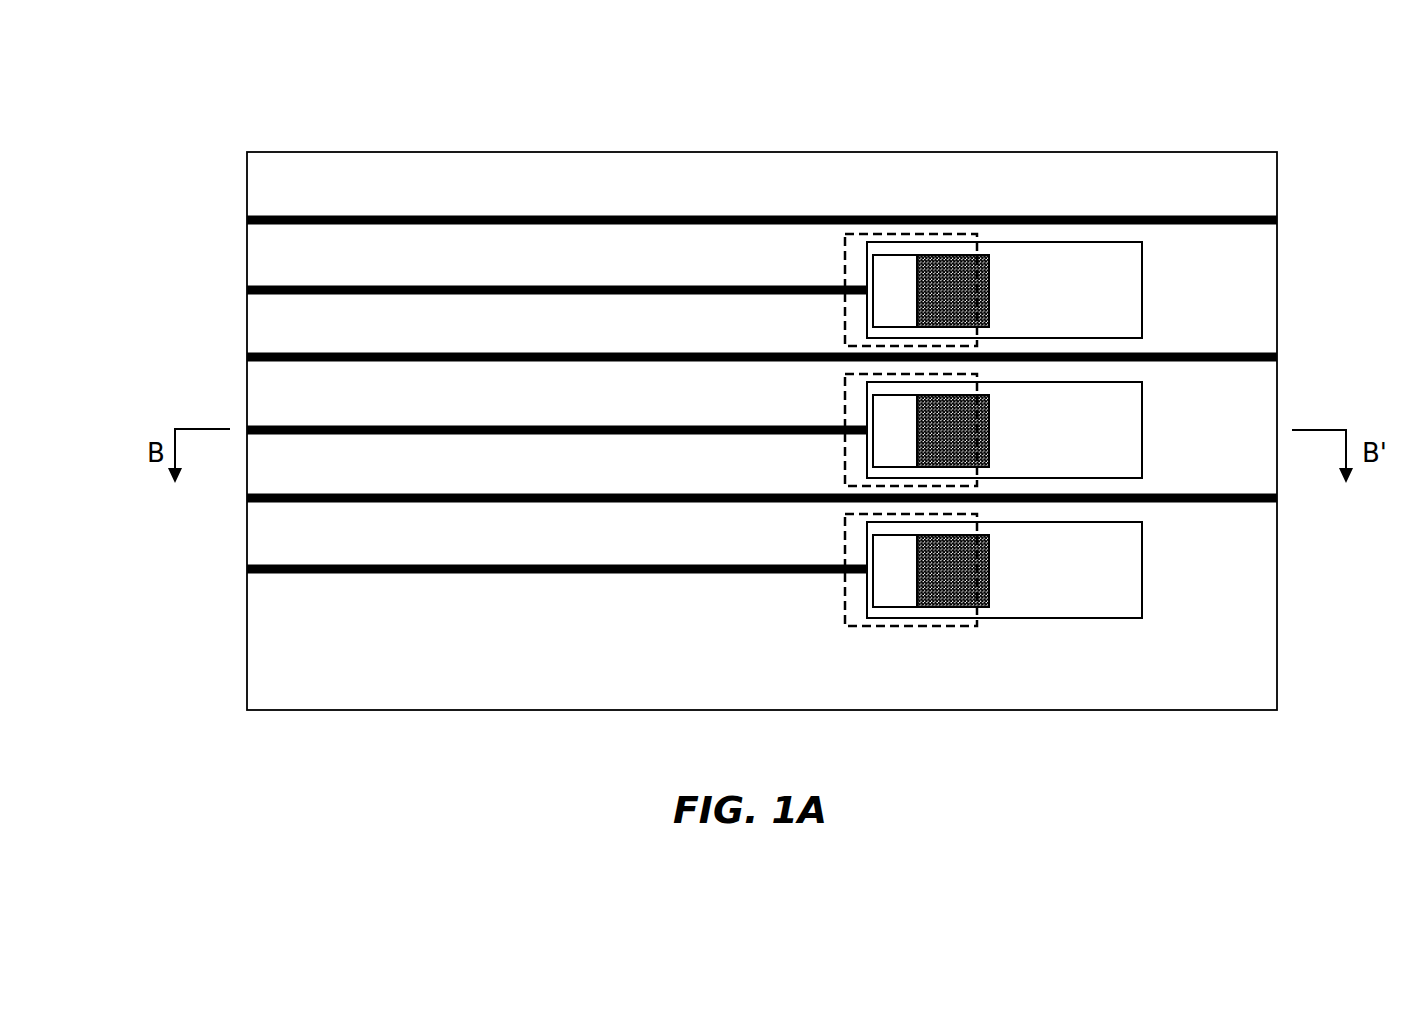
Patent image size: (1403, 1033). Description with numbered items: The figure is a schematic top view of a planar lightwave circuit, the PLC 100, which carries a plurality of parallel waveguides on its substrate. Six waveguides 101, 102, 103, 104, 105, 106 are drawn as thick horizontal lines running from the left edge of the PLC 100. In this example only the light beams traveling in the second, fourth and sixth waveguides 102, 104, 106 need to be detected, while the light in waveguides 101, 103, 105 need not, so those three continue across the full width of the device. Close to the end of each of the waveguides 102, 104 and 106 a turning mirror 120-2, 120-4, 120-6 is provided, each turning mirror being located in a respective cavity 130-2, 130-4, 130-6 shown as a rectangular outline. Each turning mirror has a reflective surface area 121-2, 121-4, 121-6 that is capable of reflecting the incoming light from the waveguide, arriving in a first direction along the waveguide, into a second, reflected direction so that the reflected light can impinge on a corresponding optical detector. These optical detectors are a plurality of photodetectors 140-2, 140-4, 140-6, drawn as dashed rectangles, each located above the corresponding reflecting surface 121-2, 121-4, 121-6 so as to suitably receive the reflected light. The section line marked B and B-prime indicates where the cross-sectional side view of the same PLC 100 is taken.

The PLC 100 is at (1141, 117).
The waveguide 101 is at (264, 216).
The waveguide 102 is at (264, 286).
The waveguide 103 is at (264, 353).
The waveguide 104 is at (264, 426).
The waveguide 105 is at (272, 502).
The waveguide 106 is at (272, 573).
The turning mirror 120-2 is at (990, 291).
The turning mirror 120-4 is at (990, 431).
The turning mirror 120-6 is at (990, 571).
The reflective surface area 121-2 is at (886, 313).
The reflective surface area 121-4 is at (886, 453).
The reflective surface area 121-6 is at (886, 593).
The cavity 130-2 is at (1143, 292).
The cavity 130-4 is at (1143, 432).
The cavity 130-6 is at (1143, 572).
The photodetector 140-2 is at (844, 247).
The photodetector 140-4 is at (844, 387).
The photodetector 140-6 is at (844, 527).